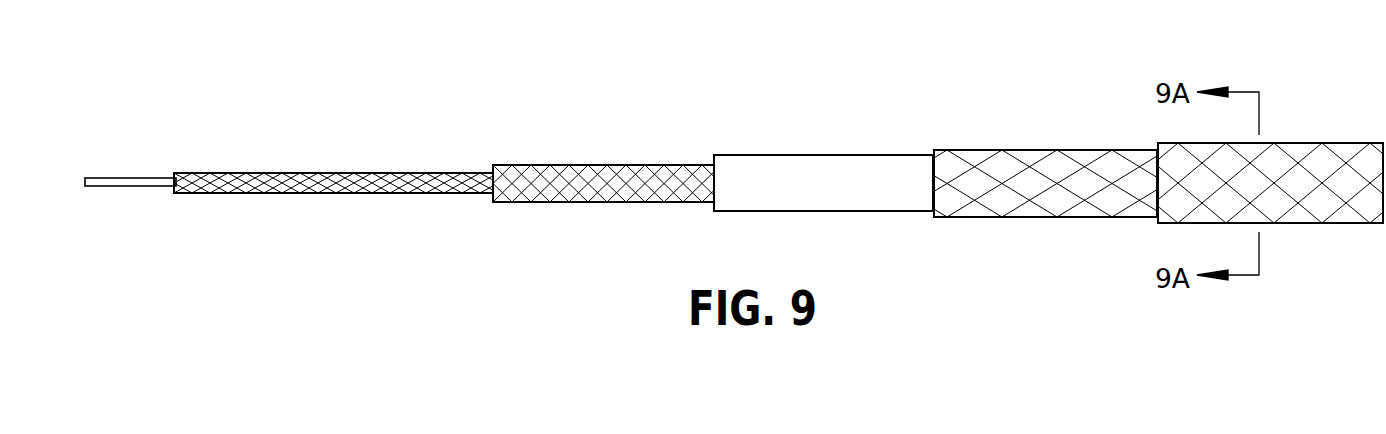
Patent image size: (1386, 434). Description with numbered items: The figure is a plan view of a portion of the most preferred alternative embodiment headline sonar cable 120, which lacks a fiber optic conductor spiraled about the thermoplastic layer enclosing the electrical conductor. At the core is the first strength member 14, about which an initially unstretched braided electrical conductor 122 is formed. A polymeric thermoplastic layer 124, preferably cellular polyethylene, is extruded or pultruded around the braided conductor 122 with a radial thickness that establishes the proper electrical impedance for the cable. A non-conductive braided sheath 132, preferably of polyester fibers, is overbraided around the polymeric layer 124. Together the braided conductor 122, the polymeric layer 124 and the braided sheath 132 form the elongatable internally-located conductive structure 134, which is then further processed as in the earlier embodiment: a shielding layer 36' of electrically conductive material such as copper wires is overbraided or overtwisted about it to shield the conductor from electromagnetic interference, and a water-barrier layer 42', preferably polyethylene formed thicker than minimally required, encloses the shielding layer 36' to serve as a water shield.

The first strength member 14 is at (128, 189).
The headline sonar cable 120 is at (958, 248).
The braided electrical conductor 122 is at (305, 173).
The polymeric thermoplastic layer 124 is at (593, 165).
The non-conductive braided sheath 132 is at (800, 155).
The elongatable internally-located conductive structure 134 is at (937, 120).
The shielding layer 36' is at (1045, 162).
The water-barrier layer 42' is at (1270, 146).